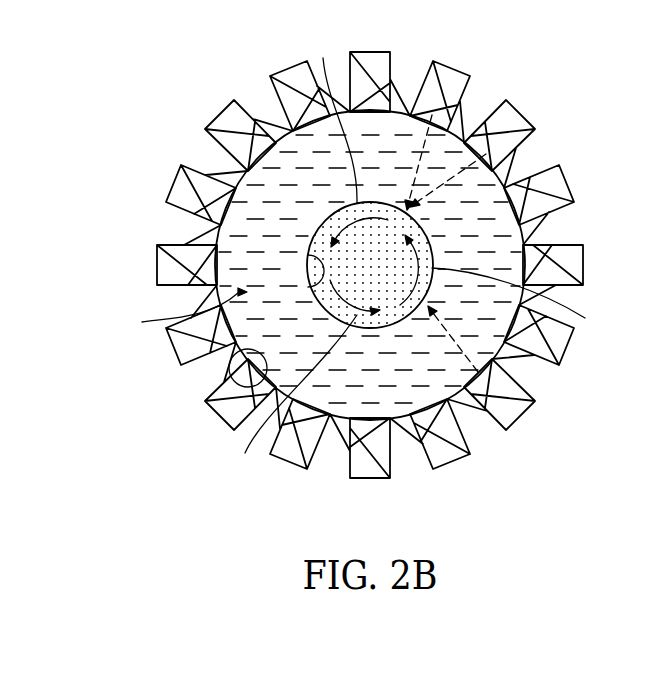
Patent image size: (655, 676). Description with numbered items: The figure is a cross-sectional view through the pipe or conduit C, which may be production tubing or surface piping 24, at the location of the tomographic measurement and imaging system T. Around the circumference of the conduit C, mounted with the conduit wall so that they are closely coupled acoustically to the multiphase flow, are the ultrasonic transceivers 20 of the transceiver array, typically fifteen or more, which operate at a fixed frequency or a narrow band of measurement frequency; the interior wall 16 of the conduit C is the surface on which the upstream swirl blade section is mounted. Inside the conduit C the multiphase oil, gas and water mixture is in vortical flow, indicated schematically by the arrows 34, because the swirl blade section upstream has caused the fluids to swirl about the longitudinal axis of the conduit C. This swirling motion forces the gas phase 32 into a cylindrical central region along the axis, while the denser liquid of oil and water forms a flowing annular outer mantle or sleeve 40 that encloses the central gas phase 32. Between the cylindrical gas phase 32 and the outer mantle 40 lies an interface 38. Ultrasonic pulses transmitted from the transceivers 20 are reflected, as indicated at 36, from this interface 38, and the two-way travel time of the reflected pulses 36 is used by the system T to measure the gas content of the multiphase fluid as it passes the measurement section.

The interior wall 16 is at (225, 368).
The ultrasonic transceivers 20 is at (358, 24).
The surface piping 24 is at (413, 85).
The gas phase 32 is at (357, 279).
The arrows 34 is at (422, 254).
The reflected ultrasonic pulses 36 is at (456, 350).
The interface 38 is at (304, 256).
The annular outer mantle 40 is at (490, 195).
The tomographic measurement and imaging system T is at (252, 58).
The conduit C is at (547, 382).